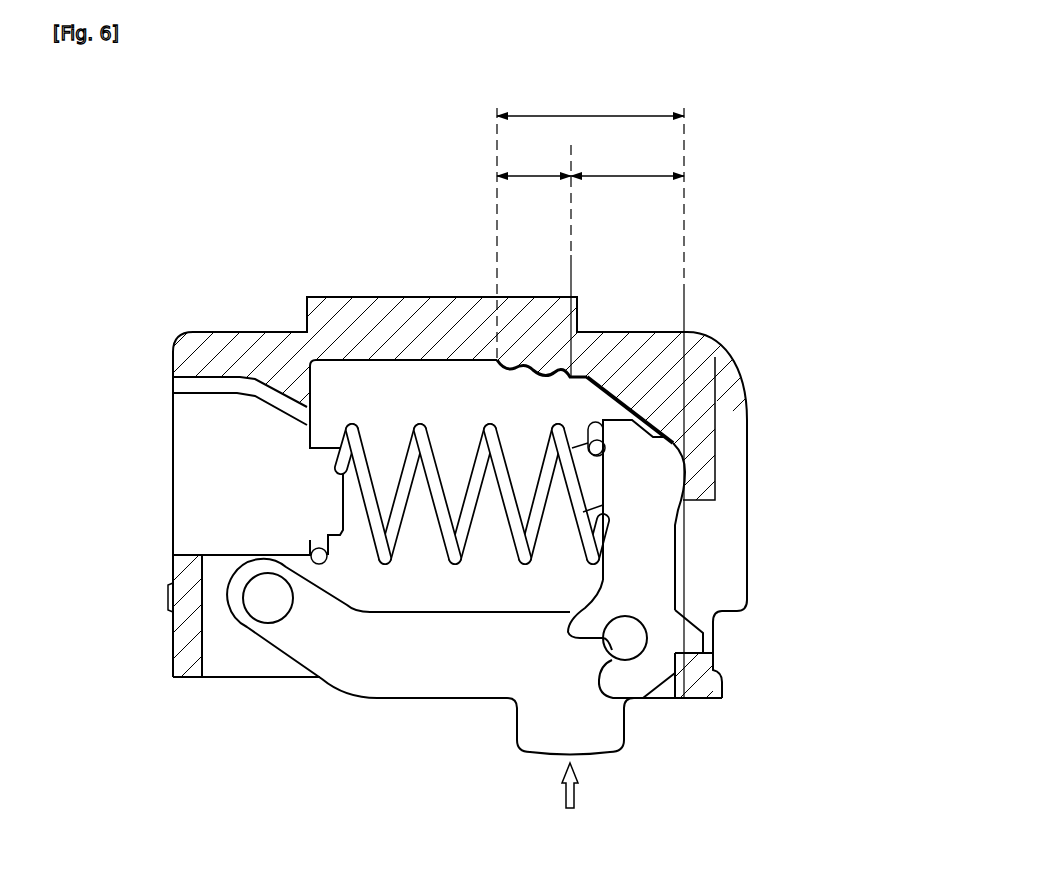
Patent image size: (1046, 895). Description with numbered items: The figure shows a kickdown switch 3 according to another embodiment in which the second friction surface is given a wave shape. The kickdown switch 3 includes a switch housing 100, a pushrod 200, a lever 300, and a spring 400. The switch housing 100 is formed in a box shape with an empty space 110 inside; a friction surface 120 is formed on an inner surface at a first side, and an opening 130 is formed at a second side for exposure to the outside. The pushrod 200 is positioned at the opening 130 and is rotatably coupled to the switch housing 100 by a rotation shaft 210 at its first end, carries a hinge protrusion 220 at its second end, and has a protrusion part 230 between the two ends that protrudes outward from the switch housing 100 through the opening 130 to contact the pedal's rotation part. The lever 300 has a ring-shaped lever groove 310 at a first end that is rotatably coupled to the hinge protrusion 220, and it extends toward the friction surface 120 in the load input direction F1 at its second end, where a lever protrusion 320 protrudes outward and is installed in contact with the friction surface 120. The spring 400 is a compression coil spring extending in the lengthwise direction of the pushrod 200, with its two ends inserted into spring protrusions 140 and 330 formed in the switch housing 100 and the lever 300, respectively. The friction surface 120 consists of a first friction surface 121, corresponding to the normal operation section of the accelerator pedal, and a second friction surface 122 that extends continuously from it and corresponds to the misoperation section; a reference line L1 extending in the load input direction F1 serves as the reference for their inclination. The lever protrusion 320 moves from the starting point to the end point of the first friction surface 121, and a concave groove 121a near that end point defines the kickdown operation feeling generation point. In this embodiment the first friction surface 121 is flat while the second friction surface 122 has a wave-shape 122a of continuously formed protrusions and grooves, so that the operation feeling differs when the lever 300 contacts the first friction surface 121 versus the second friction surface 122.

The kickdown switch 3 is at (736, 357).
The switch housing 100 is at (237, 348).
The empty space 110 is at (387, 397).
The friction surface 120 is at (590, 101).
The first friction surface 121 is at (623, 405).
The concave groove 121a is at (587, 373).
The second friction surface 122 is at (534, 161).
The wave-shape 122a is at (517, 370).
The opening 130 is at (240, 663).
The spring protrusion 140 is at (338, 507).
The pushrod 200 is at (442, 667).
The rotation shaft 210 is at (258, 598).
The hinge protrusion 220 is at (627, 630).
The protrusion part 230 is at (605, 753).
The lever 300 is at (653, 555).
The lever groove 310 is at (630, 652).
The lever protrusion 320 is at (673, 450).
The spring protrusion 330 is at (555, 487).
The spring 400 is at (420, 428).
The load input direction F1 is at (570, 802).
The reference line L1 is at (571, 268).